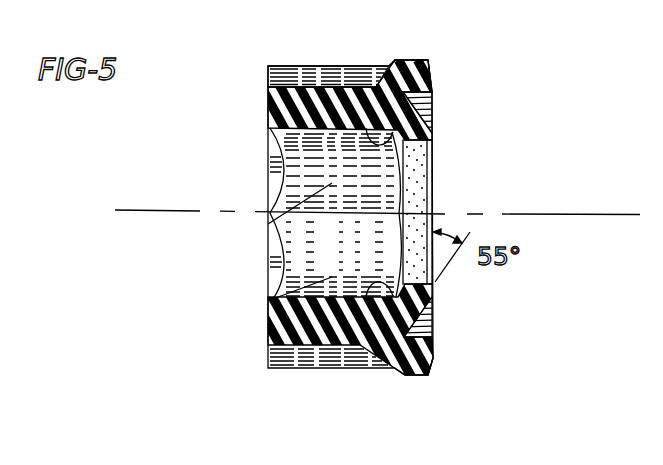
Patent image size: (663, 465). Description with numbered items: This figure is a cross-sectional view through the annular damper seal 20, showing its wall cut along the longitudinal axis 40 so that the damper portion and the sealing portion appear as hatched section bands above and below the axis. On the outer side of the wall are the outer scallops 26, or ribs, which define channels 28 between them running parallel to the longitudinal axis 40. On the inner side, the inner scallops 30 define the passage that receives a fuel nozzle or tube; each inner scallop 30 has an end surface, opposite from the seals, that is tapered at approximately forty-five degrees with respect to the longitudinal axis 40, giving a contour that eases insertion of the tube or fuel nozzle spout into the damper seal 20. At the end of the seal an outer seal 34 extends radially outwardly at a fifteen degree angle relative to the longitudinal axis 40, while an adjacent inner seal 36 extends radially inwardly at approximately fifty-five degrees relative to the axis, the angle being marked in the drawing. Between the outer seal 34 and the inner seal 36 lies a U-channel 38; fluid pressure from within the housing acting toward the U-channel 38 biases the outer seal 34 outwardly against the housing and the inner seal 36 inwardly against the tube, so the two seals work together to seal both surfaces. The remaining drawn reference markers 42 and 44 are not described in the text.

The damper seal 20 is at (287, 384).
The outer scallops 26 is at (259, 58).
The channels 28 is at (303, 84).
The inner scallops 30 is at (303, 255).
The outer seal 34 is at (429, 74).
The inner seal 36 is at (432, 140).
The U-channel 38 is at (432, 108).
The longitudinal axis 40 is at (232, 210).
The end 42 is at (268, 304).
The flange 44 is at (407, 64).